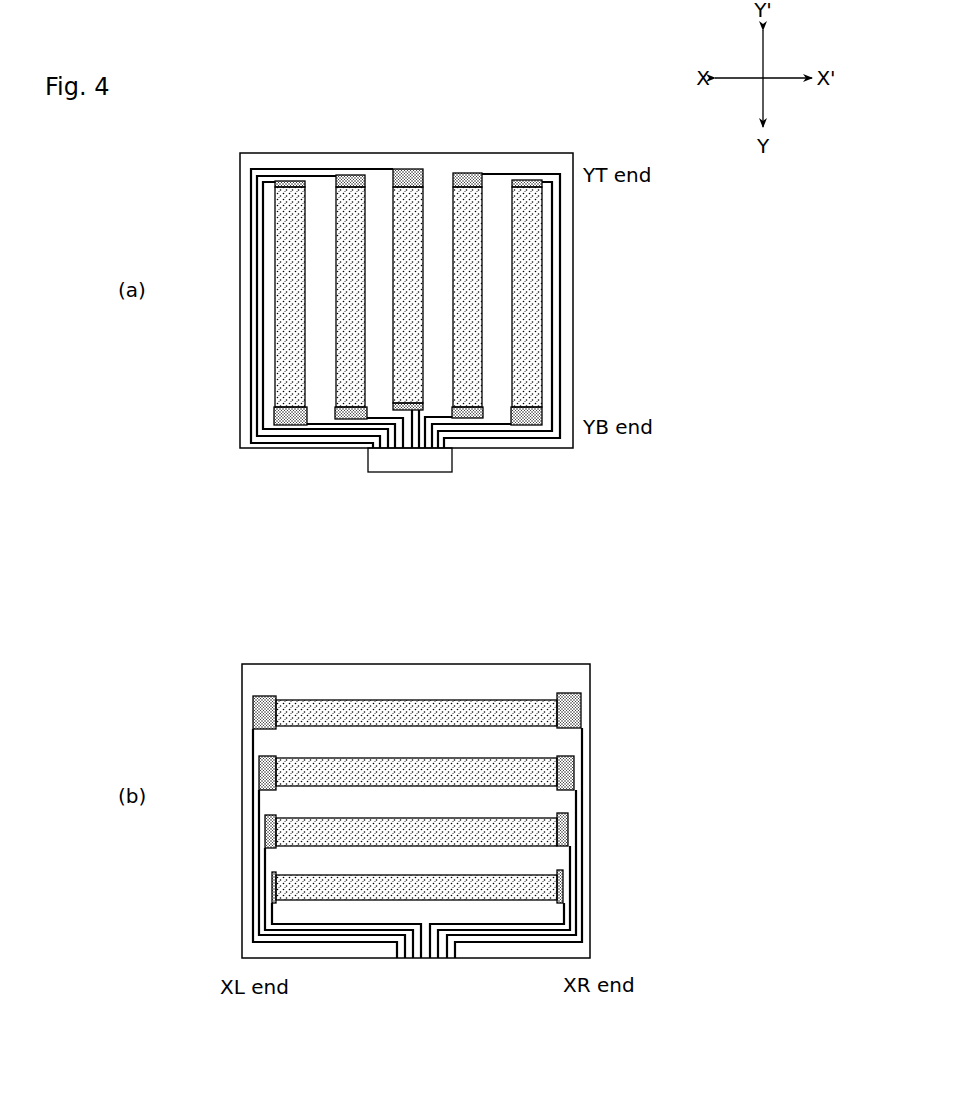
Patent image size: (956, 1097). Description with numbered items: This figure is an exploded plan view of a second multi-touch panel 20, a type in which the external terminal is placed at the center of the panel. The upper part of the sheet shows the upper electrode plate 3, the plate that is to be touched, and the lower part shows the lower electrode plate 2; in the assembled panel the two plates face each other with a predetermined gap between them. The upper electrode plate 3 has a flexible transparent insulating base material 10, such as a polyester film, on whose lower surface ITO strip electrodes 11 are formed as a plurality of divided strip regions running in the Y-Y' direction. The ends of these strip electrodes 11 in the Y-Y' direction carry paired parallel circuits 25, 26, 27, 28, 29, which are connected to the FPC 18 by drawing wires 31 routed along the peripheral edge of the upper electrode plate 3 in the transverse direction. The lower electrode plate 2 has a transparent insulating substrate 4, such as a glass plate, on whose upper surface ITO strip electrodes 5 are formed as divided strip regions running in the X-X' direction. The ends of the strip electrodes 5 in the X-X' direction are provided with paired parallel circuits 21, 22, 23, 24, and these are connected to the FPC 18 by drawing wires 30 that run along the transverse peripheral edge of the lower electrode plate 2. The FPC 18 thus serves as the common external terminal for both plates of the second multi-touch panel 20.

The lower electrode plate 2 is at (602, 792).
The upper electrode plate 3 is at (598, 282).
The transparent insulating substrate 4 is at (585, 678).
The strip electrodes 5 is at (517, 706).
The flexible transparent insulating base material 10 is at (572, 163).
The strip electrodes 11 is at (528, 232).
The FPC 18 is at (452, 465).
The second multi-touch panel 20 is at (663, 228).
The parallel circuit 21 is at (562, 887).
The parallel circuit 22 is at (565, 830).
The parallel circuit 23 is at (572, 772).
The parallel circuit 24 is at (577, 710).
The parallel circuit 25 is at (298, 182).
The parallel circuit 26 is at (353, 176).
The parallel circuit 27 is at (408, 170).
The parallel circuit 28 is at (468, 174).
The parallel circuit 29 is at (527, 181).
The drawing wires 30 is at (347, 942).
The drawing wires 31 is at (320, 443).